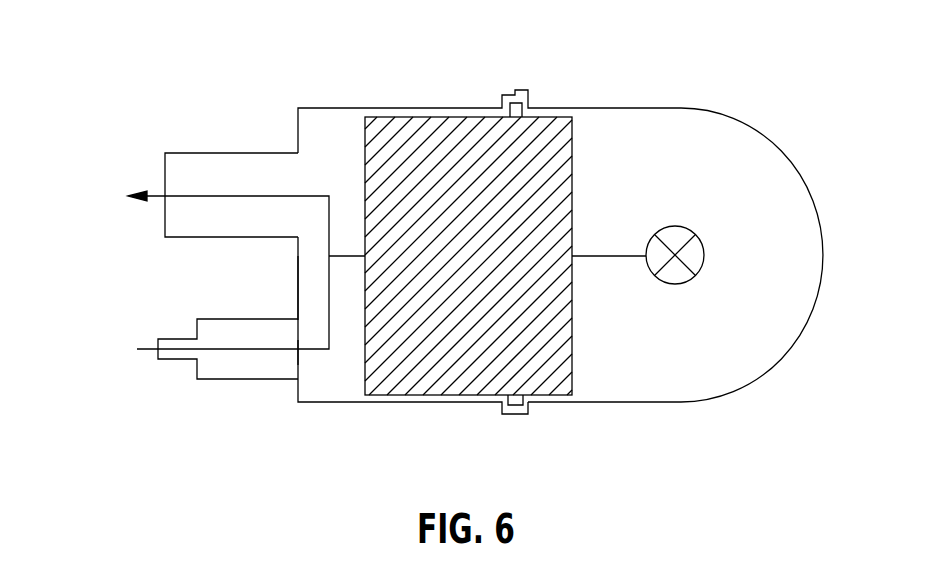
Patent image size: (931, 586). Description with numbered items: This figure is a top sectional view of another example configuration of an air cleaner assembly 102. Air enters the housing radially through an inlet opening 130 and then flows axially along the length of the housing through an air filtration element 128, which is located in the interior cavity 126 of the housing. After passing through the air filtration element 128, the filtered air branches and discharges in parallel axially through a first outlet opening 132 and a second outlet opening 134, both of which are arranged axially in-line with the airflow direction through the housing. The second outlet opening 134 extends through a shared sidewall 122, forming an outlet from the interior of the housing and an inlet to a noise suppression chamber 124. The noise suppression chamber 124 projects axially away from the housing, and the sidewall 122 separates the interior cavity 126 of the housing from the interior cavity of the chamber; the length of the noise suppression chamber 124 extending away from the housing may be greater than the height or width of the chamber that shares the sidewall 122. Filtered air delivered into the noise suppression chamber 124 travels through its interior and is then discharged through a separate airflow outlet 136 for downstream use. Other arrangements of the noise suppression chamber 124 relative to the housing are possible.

The air cleaner assembly 102 is at (778, 80).
The sidewall 122 is at (297, 292).
The noise suppression chamber 124 is at (247, 405).
The interior cavity 126 is at (688, 202).
The air filtration element 128 is at (547, 140).
The inlet opening 130 is at (675, 284).
The first outlet opening 132 is at (147, 165).
The second outlet opening 134 is at (299, 352).
The airflow outlet 136 is at (172, 361).